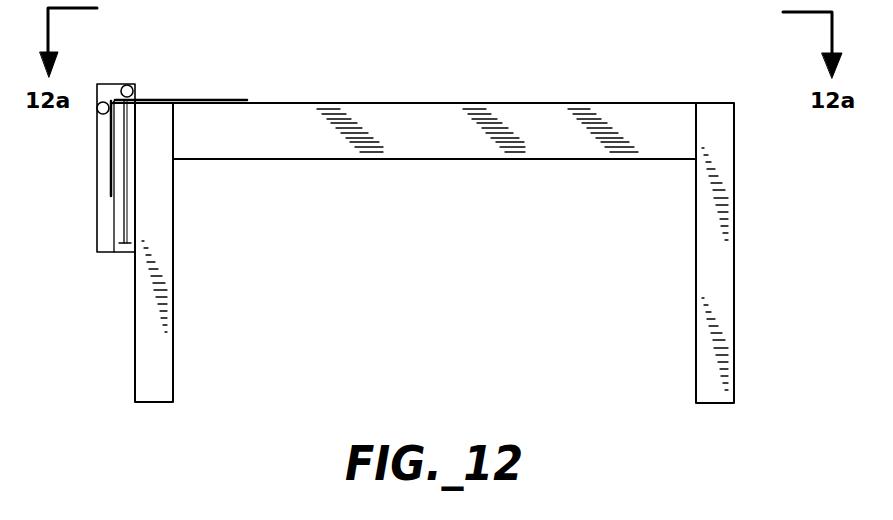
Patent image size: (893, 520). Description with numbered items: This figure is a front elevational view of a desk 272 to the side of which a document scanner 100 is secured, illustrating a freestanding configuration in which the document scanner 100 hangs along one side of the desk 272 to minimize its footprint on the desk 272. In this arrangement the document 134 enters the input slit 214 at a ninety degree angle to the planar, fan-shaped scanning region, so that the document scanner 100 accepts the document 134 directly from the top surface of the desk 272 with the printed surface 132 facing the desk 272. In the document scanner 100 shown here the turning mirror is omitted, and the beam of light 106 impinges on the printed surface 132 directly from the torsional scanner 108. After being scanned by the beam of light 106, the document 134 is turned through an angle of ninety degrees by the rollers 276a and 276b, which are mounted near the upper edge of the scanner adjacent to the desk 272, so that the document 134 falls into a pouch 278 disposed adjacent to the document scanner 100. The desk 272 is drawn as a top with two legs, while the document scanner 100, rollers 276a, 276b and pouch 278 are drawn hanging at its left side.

The document scanner 100 is at (133, 197).
The beam of light 106 is at (125, 222).
The torsional scanner 108 is at (123, 248).
The printed surface 132 is at (215, 104).
The document 134 is at (205, 100).
The input slit 214 is at (136, 100).
The desk 272 is at (390, 108).
The roller 276a is at (127, 84).
The roller 276b is at (98, 116).
The pouch 278 is at (97, 180).